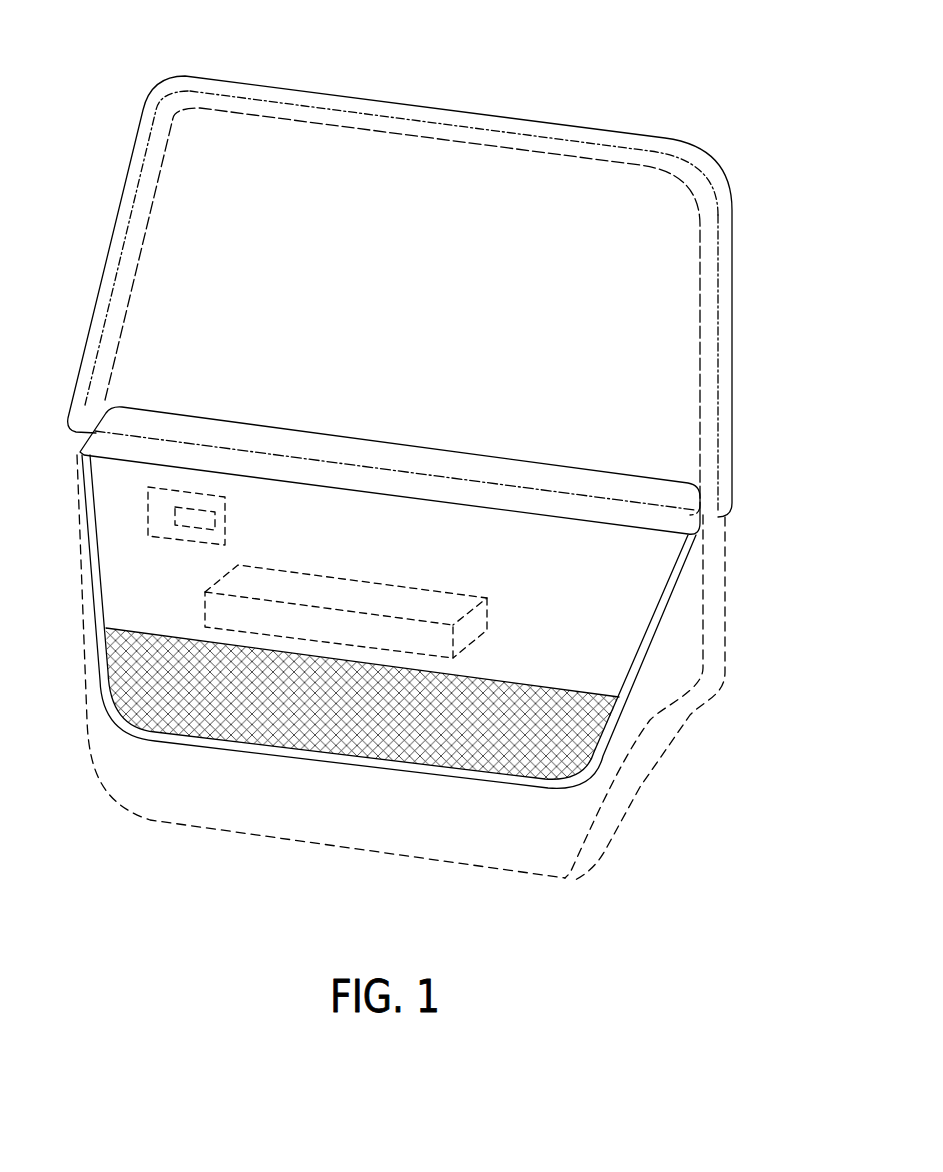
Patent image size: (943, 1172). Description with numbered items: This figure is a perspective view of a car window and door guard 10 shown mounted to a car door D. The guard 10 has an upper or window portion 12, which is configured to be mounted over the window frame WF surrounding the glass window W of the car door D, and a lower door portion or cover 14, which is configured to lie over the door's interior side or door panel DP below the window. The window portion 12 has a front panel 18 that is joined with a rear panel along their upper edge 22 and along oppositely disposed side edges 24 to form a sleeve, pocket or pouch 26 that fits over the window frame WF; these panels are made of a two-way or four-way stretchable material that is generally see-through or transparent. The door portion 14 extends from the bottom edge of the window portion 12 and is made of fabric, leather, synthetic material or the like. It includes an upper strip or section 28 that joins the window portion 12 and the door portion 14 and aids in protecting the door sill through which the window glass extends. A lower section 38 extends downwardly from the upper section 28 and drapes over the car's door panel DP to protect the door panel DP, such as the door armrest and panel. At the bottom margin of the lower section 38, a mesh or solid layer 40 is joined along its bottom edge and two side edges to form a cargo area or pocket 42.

The car window and door guard 10 is at (736, 112).
The window portion 12 is at (733, 312).
The door portion 14 is at (683, 583).
The front panel 18 is at (343, 148).
The upper edge 22 is at (555, 133).
The side edges 24 is at (733, 253).
The pouch 26 is at (707, 375).
The upper section 28 is at (480, 468).
The lower section 38 is at (627, 632).
The mesh or solid layer 40 is at (330, 717).
The cargo area or pocket 42 is at (512, 693).
The glass window W is at (300, 182).
The window frame WF is at (733, 187).
The car door D is at (720, 672).
The door panel DP is at (395, 782).